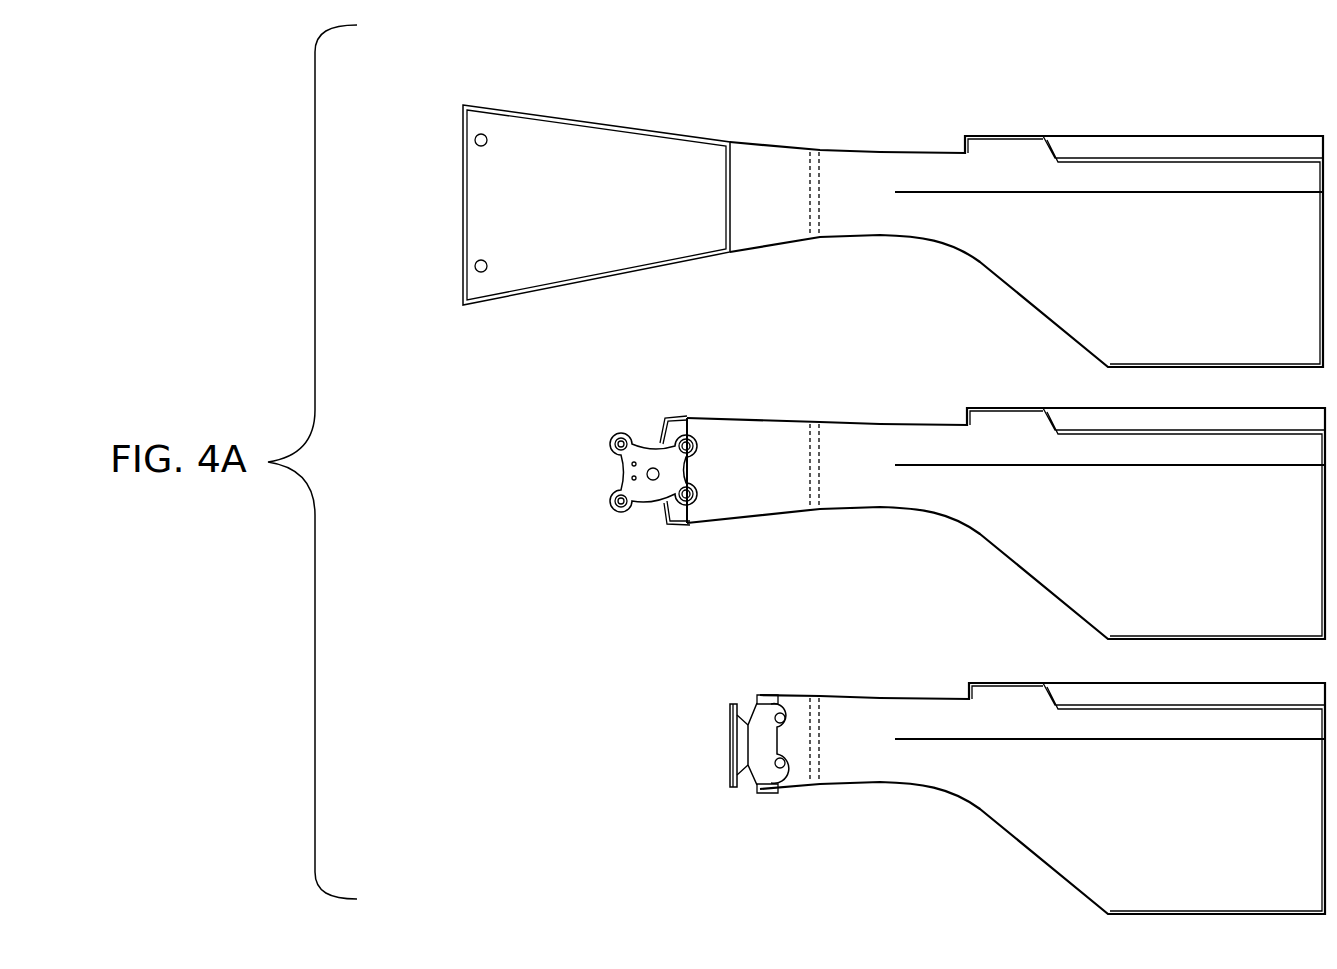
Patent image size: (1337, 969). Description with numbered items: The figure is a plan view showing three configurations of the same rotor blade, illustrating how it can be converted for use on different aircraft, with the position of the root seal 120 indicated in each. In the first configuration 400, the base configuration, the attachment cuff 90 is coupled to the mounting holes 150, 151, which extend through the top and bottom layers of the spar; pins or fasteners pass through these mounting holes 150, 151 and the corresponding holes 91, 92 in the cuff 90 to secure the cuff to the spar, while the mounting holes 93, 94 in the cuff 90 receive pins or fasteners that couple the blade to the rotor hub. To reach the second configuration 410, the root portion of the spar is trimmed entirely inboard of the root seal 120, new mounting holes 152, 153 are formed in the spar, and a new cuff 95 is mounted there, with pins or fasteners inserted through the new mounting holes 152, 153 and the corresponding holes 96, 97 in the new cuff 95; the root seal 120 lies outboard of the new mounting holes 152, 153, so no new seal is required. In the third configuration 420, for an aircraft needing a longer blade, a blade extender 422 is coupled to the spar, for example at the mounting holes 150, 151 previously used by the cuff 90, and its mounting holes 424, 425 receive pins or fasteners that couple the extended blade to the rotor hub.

The root seal 120 is at (811, 152).
The third configuration 420 is at (463, 60).
The blade extender 422 is at (617, 124).
The mounting hole 424 is at (467, 138).
The mounting hole 425 is at (467, 267).
The first configuration 400 is at (594, 425).
The attachment cuff 90 is at (612, 498).
The hole 91 is at (684, 420).
The hole 92 is at (680, 524).
The mounting hole 93 is at (632, 440).
The mounting hole 94 is at (622, 515).
The mounting hole 150 is at (690, 428).
The mounting hole 151 is at (693, 518).
The second configuration 410 is at (596, 694).
The new cuff 95 is at (730, 770).
The hole 96 is at (760, 698).
The hole 97 is at (775, 785).
The new mounting hole 152 is at (776, 697).
The new mounting hole 153 is at (780, 775).